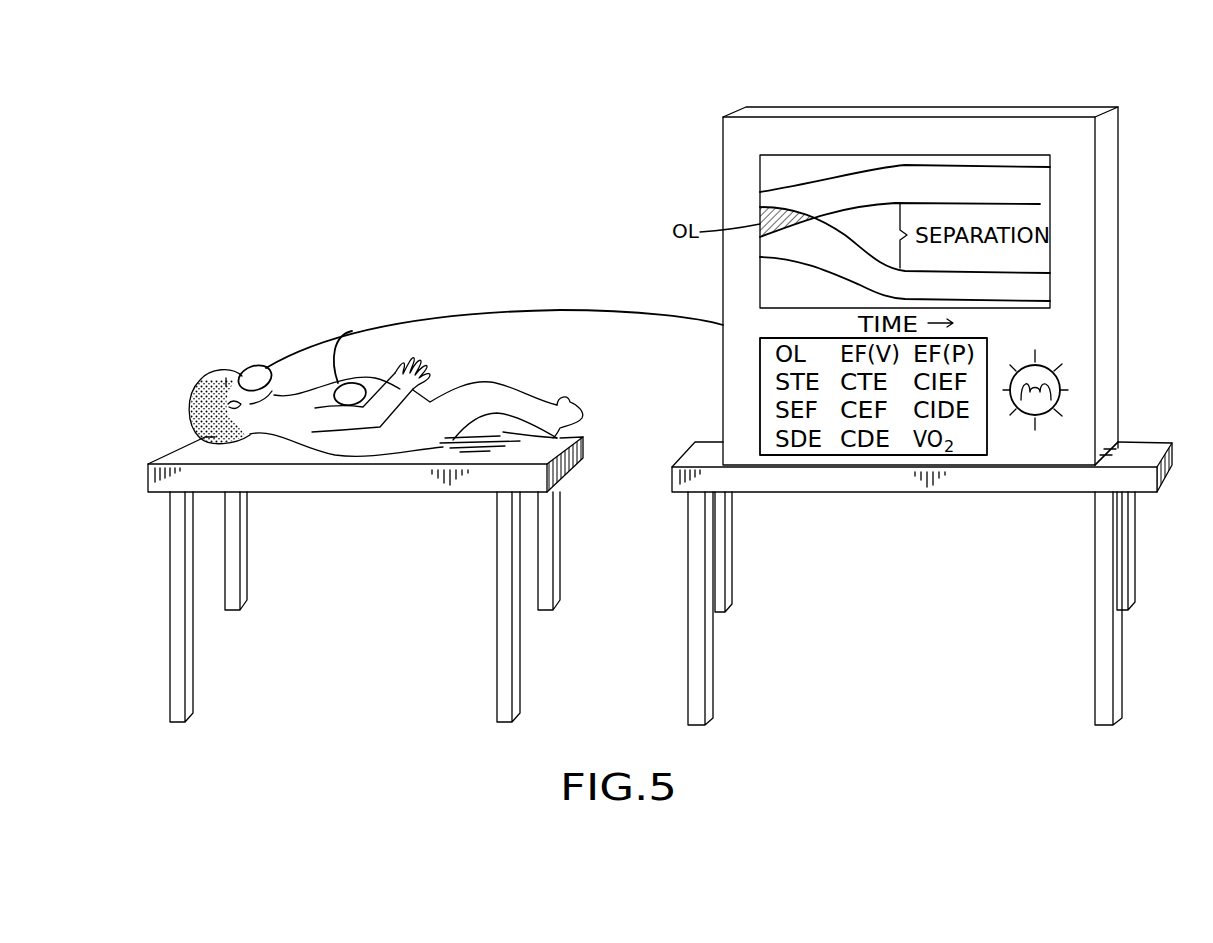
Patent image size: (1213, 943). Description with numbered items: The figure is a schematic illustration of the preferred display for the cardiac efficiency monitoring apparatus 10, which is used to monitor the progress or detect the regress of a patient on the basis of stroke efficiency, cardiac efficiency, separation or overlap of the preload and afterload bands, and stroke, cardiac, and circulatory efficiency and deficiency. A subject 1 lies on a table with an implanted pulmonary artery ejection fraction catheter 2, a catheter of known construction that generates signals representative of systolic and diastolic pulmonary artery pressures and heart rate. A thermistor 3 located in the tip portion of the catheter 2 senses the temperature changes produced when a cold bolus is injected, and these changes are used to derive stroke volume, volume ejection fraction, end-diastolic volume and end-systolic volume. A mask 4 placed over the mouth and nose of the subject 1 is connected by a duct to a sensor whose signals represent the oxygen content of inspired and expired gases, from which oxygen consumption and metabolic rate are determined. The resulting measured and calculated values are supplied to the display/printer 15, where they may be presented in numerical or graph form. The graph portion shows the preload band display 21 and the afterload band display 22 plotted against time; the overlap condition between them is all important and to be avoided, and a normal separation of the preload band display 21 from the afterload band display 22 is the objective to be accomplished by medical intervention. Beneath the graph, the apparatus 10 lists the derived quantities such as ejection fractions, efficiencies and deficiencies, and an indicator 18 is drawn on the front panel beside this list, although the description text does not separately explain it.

The subject 1 is at (202, 380).
The pulmonary artery ejection fraction catheter 2 is at (383, 320).
The thermistor 3 is at (357, 386).
The mask 4 is at (250, 367).
The cardiac efficiency monitoring apparatus 10 is at (1126, 102).
The display/printer 15 is at (850, 153).
The indicator lamp 18 is at (1062, 381).
The preload band display 21 is at (1028, 172).
The afterload band display 22 is at (1027, 299).